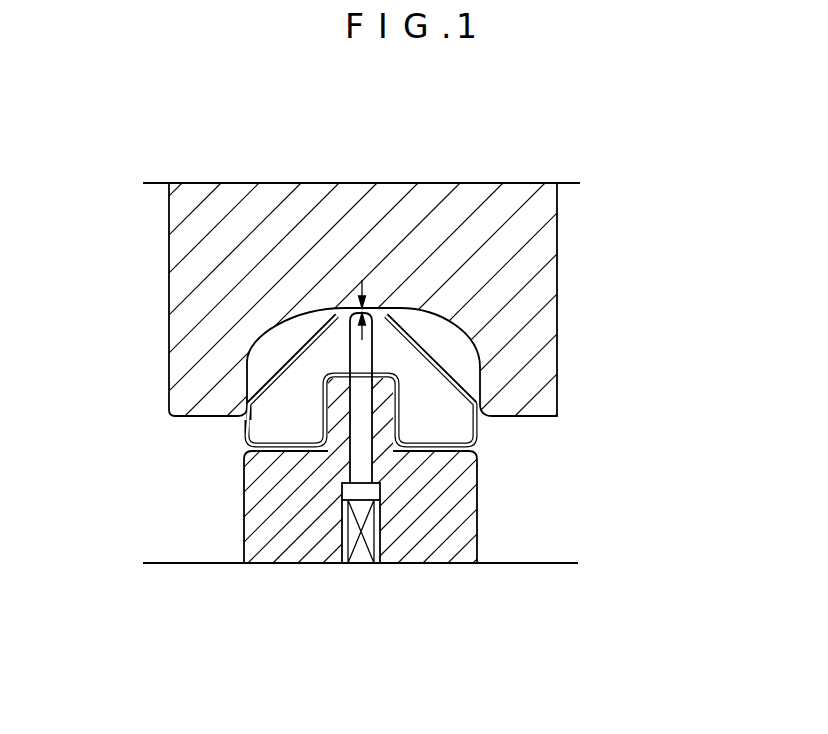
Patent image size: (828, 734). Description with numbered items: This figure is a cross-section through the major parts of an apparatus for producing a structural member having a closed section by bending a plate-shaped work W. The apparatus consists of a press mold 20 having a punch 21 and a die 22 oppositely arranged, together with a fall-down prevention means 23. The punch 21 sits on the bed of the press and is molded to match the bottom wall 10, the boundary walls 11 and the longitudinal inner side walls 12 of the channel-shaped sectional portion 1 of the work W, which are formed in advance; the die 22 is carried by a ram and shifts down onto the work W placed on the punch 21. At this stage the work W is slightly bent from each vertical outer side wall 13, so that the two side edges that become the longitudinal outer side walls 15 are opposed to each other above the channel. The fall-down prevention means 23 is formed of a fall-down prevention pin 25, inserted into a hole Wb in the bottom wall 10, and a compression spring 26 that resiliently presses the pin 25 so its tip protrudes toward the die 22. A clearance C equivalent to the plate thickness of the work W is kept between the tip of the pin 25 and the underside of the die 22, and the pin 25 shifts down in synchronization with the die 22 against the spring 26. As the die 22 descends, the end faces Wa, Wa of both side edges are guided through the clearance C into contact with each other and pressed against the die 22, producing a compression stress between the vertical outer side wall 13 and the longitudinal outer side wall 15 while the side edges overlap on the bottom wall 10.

The channel-shaped sectional portion 1 is at (323, 380).
The bottom wall 10 is at (380, 368).
The boundary walls 11 is at (312, 411).
The longitudinal inner side walls 12 is at (258, 477).
The vertical outer side wall 13 is at (240, 433).
The longitudinal outer side wall 15 is at (307, 345).
The press mold 20 is at (394, 263).
The punch 21 is at (406, 472).
The die 22 is at (513, 202).
The fall-down prevention means 23 is at (332, 489).
The fall-down prevention pin 25 is at (372, 452).
The compression spring 26 is at (365, 540).
The clearance C is at (365, 292).
The work W is at (370, 294).
The end faces Wa is at (343, 310).
The holes Wb is at (350, 373).